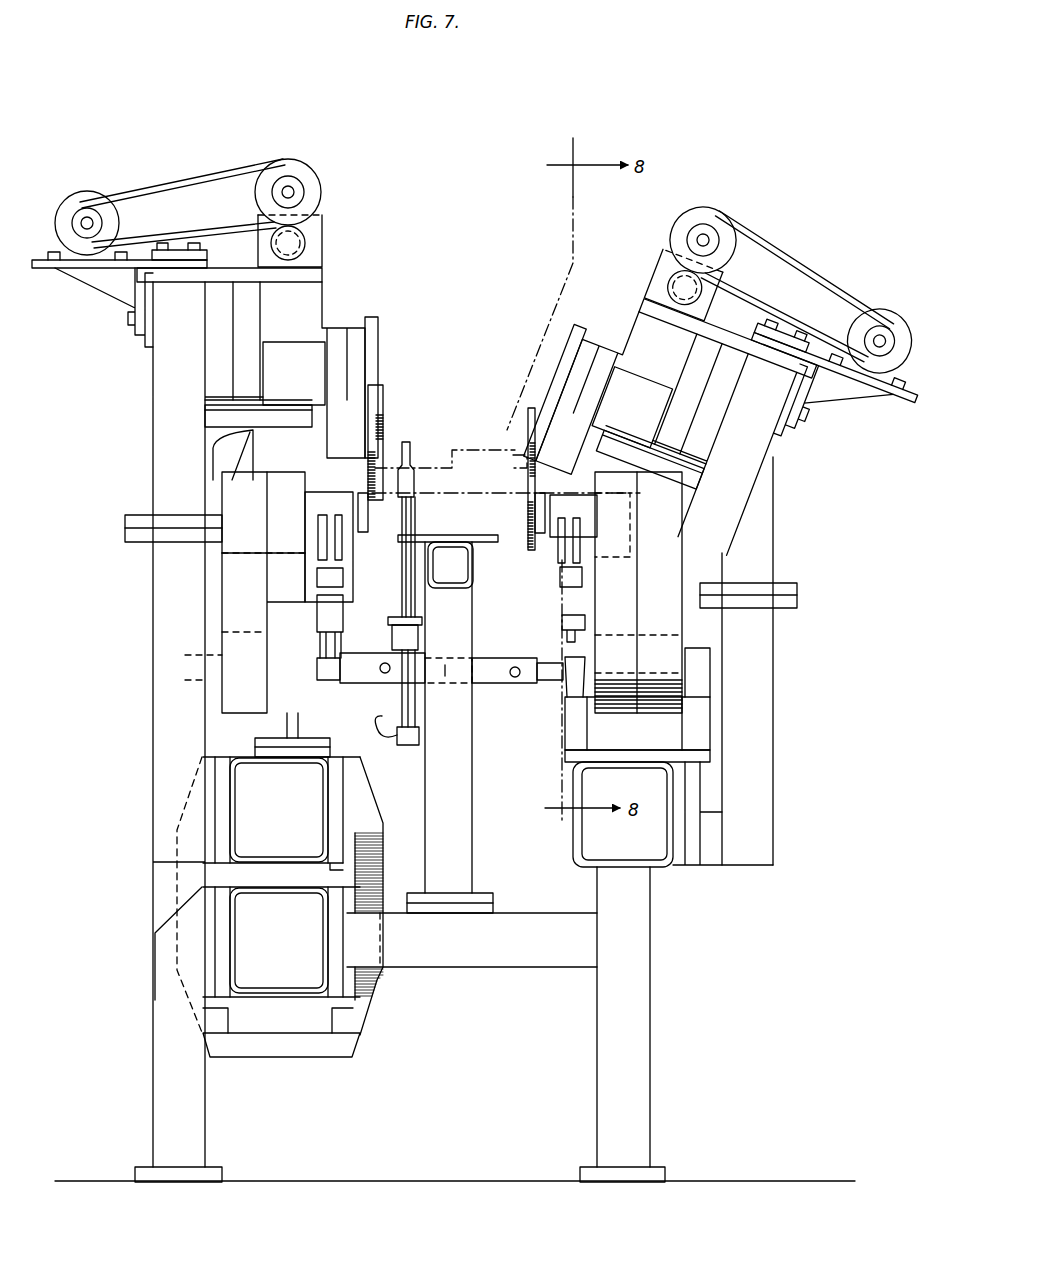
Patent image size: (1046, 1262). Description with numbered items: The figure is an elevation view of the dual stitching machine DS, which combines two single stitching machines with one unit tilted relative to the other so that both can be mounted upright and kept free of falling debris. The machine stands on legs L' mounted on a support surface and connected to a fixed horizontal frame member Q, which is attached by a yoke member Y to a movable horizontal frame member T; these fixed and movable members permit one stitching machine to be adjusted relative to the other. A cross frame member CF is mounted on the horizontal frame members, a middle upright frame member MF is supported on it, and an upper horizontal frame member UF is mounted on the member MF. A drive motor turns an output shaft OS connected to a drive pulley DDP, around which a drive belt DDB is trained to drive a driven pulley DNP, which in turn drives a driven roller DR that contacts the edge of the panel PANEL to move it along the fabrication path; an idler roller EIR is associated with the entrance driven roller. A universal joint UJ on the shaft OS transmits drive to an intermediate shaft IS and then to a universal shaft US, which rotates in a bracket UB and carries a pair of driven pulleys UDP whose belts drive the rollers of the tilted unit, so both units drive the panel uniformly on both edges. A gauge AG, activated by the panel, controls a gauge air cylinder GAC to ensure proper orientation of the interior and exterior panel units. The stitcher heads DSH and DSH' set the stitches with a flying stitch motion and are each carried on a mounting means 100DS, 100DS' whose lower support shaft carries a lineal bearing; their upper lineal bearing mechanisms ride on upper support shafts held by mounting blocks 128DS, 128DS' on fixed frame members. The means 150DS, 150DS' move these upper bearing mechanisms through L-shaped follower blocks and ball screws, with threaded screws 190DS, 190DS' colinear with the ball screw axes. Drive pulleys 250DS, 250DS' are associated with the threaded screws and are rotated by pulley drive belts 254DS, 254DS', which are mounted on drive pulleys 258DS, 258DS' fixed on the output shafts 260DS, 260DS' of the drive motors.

The drive pulley 250DS is at (320, 179).
The drive pulley 258DS is at (89, 199).
The pulley drive belt 254DS is at (182, 198).
The threaded screw 190DS is at (335, 237).
The mounting block 128DS is at (328, 241).
The means for moving the upper bearing mechanism 150DS is at (224, 255).
The output shaft 260DS is at (58, 280).
The mounting means 100DS is at (361, 366).
The dual stitching machine DS is at (451, 212).
The drive pulley 250DS' is at (724, 228).
The drive pulley 258DS' is at (879, 324).
The pulley drive belt 254DS' is at (797, 288).
The threaded screw 190DS' is at (676, 316).
The mounting block 128DS' is at (658, 284).
The means for moving the upper bearing mechanism 150DS' is at (630, 222).
The output shaft 260DS' is at (873, 393).
The mounting means 100DS' is at (581, 384).
The stitcher head DSH is at (403, 436).
The stitcher head DSH' is at (509, 451).
The idler roller EIR is at (375, 432).
The panel PANEL is at (467, 445).
The gauge AG is at (415, 460).
The gauge air cylinder GAC is at (400, 746).
The driven roller DR is at (380, 518).
The driven pulley DNP is at (212, 470).
The drive belt DDB is at (242, 578).
The drive pulley DDP is at (220, 650).
The output shaft OS is at (195, 684).
The universal joint UJ is at (362, 690).
The intermediate shaft IS is at (445, 678).
The universal shaft US is at (500, 684).
The middle upright frame member MF is at (463, 841).
The upper horizontal frame member UF is at (473, 568).
The driven pulleys UDP is at (604, 706).
The bracket UB is at (572, 735).
The movable horizontal frame member T is at (230, 812).
The cross frame member CF is at (492, 953).
The yoke member Y is at (268, 1047).
The fixed horizontal frame member Q is at (307, 985).
The legs L' is at (219, 1131).